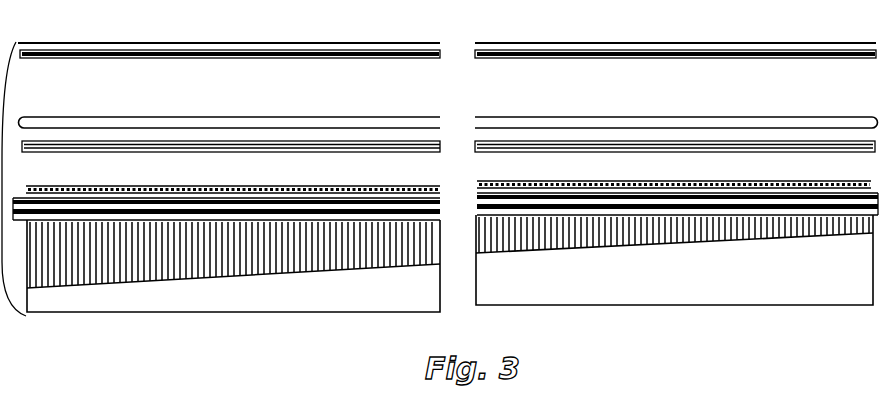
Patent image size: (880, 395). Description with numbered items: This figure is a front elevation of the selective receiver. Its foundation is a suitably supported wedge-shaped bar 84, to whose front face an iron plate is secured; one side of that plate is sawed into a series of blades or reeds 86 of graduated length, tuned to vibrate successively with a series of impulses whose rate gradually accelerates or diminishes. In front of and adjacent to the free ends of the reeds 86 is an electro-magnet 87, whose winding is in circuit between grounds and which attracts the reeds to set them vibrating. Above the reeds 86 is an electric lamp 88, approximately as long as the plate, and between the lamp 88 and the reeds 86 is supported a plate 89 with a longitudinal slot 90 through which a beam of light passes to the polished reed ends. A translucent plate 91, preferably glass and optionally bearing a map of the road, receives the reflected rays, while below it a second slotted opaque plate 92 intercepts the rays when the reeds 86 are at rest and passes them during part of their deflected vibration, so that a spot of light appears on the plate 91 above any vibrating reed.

The wedge-shaped bar 84 is at (688, 303).
The blades or reeds 86 is at (41, 243).
The electro-magnet 87 is at (758, 196).
The electric lamp 88 is at (198, 127).
The slotted plate 89 is at (533, 146).
The longitudinal slot 90 is at (308, 145).
The translucent plate 91 is at (138, 44).
The slotted opaque plate 92 is at (818, 55).